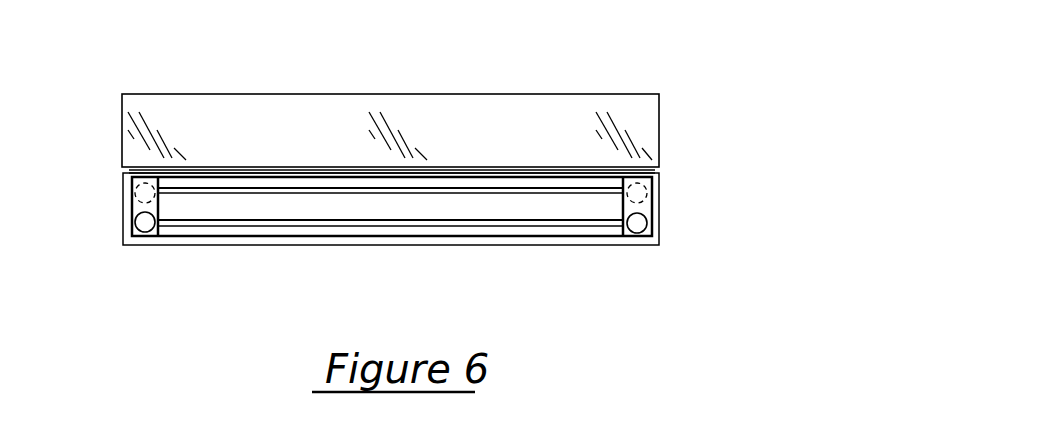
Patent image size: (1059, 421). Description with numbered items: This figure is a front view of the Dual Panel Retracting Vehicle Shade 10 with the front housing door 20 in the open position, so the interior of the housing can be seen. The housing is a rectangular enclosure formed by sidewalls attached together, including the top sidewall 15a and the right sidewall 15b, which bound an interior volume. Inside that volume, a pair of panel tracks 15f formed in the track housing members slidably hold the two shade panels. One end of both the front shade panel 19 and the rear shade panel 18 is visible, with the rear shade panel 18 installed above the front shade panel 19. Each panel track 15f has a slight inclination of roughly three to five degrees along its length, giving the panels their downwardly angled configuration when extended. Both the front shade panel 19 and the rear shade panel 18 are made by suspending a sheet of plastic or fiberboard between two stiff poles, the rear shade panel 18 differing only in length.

The pointer/display assembly 10 is at (416, 126).
The front housing door 20 is at (655, 135).
The top sidewall 15a is at (660, 219).
The right sidewall 15b is at (130, 210).
The panel track 15f is at (145, 232).
The rear shade panel 18 is at (377, 195).
The front shade panel 19 is at (295, 225).